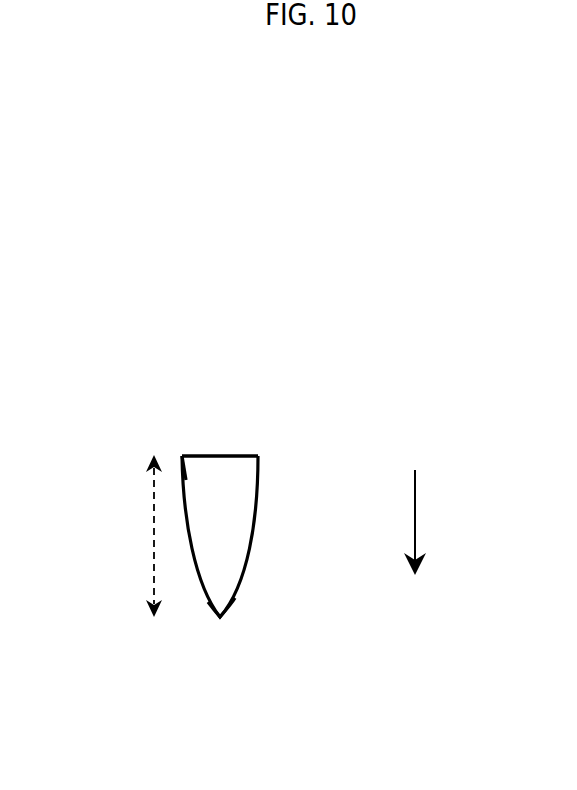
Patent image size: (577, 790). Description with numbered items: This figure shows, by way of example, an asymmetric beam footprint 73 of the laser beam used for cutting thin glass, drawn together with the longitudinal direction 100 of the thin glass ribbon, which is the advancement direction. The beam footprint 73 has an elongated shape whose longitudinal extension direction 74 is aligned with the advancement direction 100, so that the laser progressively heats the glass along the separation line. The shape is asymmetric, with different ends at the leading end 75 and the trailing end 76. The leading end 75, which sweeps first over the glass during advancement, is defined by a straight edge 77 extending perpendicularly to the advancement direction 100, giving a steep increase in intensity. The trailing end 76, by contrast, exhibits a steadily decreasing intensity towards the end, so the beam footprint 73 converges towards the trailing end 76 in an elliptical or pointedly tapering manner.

The beam footprint 73 is at (305, 536).
The longitudinal extension direction of the beam footprint 74 is at (136, 536).
The leading end 75 is at (184, 447).
The trailing end 76 is at (246, 622).
The edge 77 is at (225, 455).
The longitudinal direction 100 is at (418, 517).